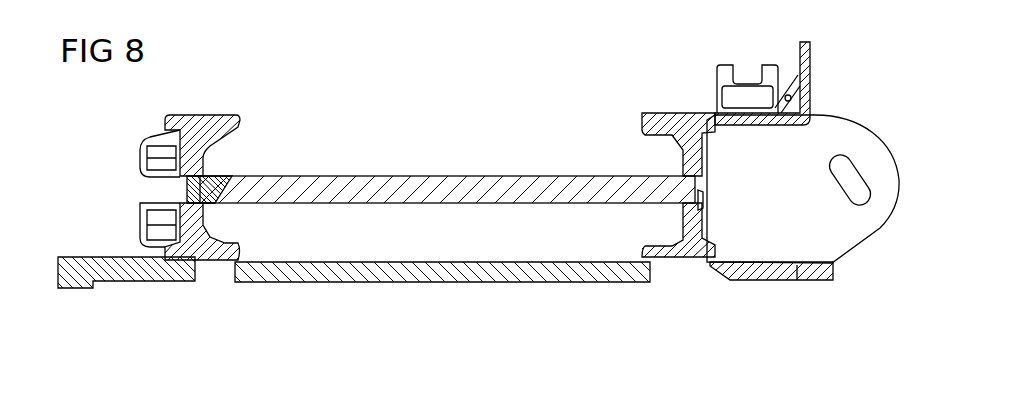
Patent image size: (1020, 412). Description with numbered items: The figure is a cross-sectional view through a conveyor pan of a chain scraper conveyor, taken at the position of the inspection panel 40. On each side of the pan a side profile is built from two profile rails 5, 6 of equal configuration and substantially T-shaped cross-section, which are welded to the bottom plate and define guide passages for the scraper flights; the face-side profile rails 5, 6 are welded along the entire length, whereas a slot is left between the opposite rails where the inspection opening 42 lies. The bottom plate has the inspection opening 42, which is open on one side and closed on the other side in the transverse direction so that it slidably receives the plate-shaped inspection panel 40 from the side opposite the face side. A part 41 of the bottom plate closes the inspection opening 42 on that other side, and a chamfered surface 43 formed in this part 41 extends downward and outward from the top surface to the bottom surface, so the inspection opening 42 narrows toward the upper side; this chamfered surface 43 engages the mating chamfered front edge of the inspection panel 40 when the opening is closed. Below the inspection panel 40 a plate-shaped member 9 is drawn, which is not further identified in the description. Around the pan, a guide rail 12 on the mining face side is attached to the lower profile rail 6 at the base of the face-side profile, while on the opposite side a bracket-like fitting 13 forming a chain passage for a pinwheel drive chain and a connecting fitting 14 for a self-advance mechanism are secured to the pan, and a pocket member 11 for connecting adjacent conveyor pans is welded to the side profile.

The profile rail 5 is at (212, 117).
The profile rail 6 is at (208, 262).
The carrier plate 9 is at (441, 283).
The pocket member 11 is at (147, 146).
The rail 12 is at (115, 283).
The bracket-like fitting 13 is at (818, 60).
The connecting fitting 14 is at (842, 243).
The inspection panel 40 is at (497, 175).
The part of bottom plate 41 is at (226, 177).
The inspection opening 42 is at (387, 144).
The chamfered surface 43 is at (224, 199).